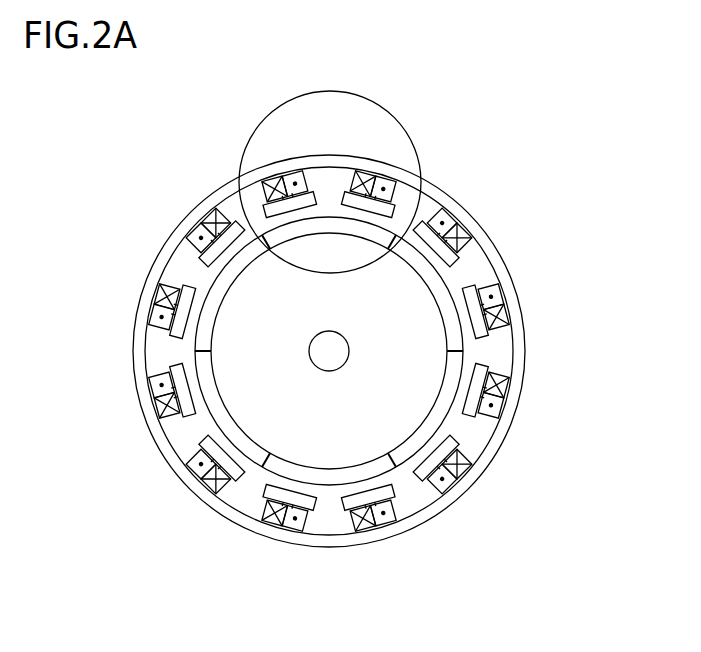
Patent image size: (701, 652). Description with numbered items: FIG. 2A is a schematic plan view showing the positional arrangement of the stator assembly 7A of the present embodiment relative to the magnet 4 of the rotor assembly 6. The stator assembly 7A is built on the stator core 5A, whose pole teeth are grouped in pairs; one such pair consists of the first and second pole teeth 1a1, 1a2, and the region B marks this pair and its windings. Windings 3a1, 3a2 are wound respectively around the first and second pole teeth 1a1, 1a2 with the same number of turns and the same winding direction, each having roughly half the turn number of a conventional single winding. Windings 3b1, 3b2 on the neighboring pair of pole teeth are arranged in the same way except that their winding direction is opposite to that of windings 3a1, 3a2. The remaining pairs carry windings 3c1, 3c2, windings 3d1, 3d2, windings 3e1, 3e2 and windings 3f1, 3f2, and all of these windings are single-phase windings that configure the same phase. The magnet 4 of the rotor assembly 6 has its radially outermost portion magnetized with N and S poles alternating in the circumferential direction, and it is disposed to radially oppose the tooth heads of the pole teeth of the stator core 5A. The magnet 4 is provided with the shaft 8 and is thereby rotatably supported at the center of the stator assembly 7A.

The first pole tooth 1a1 is at (282, 174).
The second pole tooth 1a2 is at (377, 170).
The winding 3a1 is at (294, 172).
The winding 3a2 is at (385, 183).
The winding 3b1 is at (460, 229).
The winding 3b2 is at (503, 300).
The winding 3c1 is at (500, 395).
The winding 3c2 is at (460, 472).
The winding 3d1 is at (373, 522).
The winding 3d2 is at (283, 522).
The winding 3e1 is at (205, 470).
The winding 3e2 is at (158, 400).
The winding 3f1 is at (155, 297).
The winding 3f2 is at (203, 230).
The magnet 4 is at (329, 357).
The stator core 5A is at (328, 156).
The rotor assembly 6 is at (284, 463).
The stator assembly 7A is at (306, 146).
The shaft 8 is at (256, 470).
The region B is at (279, 156).